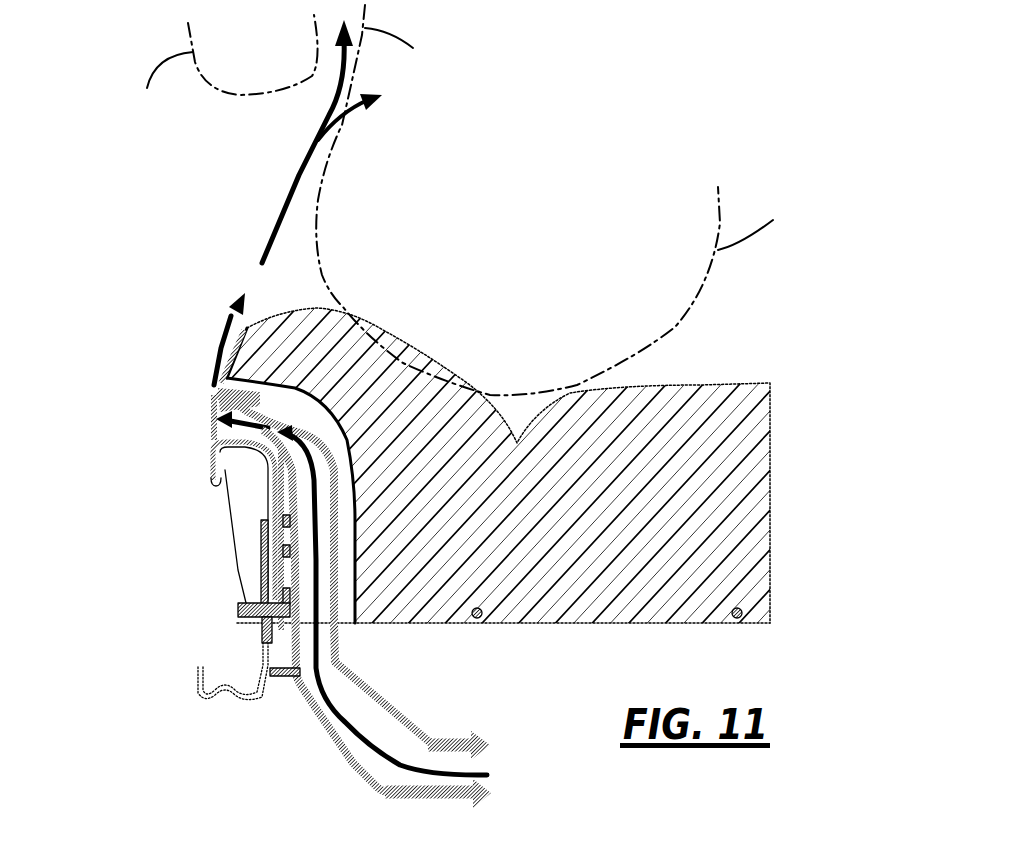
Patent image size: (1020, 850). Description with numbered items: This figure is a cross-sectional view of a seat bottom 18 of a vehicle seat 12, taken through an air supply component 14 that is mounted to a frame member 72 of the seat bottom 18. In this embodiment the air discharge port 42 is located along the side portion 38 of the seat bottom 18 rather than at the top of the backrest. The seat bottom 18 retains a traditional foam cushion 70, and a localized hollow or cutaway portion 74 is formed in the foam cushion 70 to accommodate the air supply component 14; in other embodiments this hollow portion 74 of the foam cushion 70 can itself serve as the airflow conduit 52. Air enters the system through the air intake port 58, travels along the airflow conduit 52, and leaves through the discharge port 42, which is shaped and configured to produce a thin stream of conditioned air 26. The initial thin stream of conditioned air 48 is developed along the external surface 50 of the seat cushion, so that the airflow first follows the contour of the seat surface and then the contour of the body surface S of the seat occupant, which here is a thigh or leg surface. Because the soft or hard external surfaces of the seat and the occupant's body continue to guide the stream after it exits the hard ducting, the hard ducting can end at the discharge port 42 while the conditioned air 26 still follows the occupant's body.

The seat 12 is at (760, 323).
The air supply component 14 is at (293, 497).
The seat bottom 18 is at (597, 623).
The thin stream of conditioned air 26 is at (286, 208).
The side portion 38 is at (237, 553).
The air discharge port 42 is at (215, 403).
The initial thin stream of conditioned air 48 is at (213, 357).
The external surface 50 is at (238, 294).
The airflow conduit 52 is at (343, 672).
The air intake port 58 is at (487, 757).
The foam cushion 70 is at (449, 505).
The frame member 72 is at (212, 473).
The hollow portion 74 is at (312, 406).
The body surface S is at (310, 173).